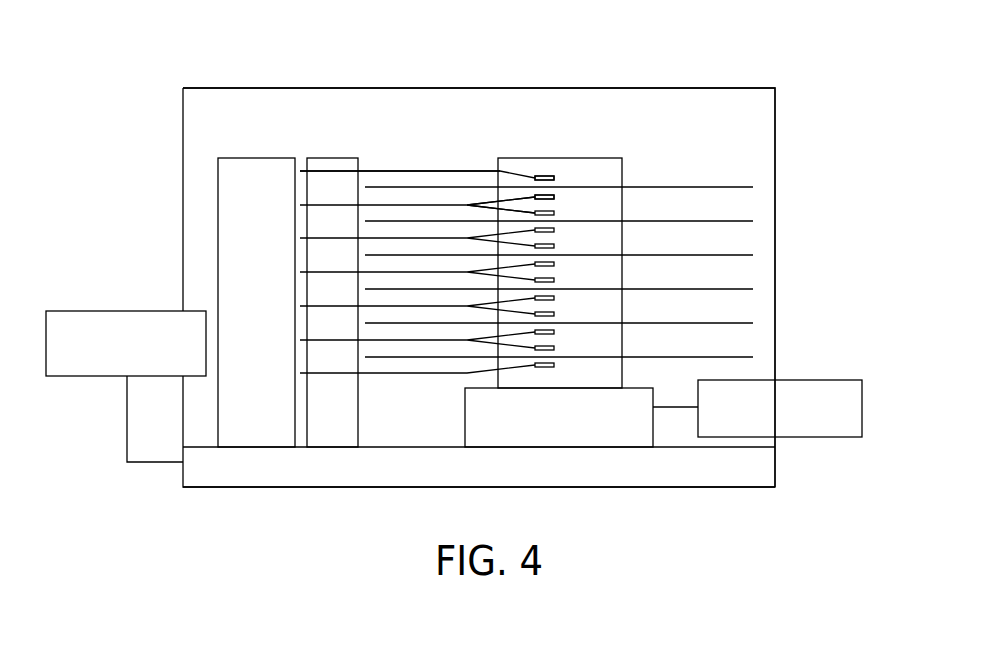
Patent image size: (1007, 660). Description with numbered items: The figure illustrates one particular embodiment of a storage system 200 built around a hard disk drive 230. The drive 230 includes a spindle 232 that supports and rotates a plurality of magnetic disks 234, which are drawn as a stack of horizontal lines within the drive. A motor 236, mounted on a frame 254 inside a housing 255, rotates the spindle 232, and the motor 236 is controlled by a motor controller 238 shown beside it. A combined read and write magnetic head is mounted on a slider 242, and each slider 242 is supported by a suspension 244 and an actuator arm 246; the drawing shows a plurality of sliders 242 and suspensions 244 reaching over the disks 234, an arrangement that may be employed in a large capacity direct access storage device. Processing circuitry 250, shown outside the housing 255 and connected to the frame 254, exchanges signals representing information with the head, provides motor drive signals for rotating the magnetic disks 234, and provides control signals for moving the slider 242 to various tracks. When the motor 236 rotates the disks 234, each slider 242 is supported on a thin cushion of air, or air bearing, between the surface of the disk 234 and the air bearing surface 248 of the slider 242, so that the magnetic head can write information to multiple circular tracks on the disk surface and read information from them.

The storage system 200 is at (218, 58).
The hard disk drive 230 is at (667, 153).
The spindle 232 is at (610, 158).
The magnetic disks 234 is at (723, 187).
The motor 236 is at (581, 417).
The motor controller 238 is at (808, 437).
The slider 242 is at (554, 197).
The suspension 244 is at (530, 203).
The actuator arm 246 is at (462, 203).
The air bearing surface 248 is at (554, 314).
The processing circuitry 250 is at (132, 311).
The frame 254 is at (270, 487).
The housing 255 is at (690, 88).